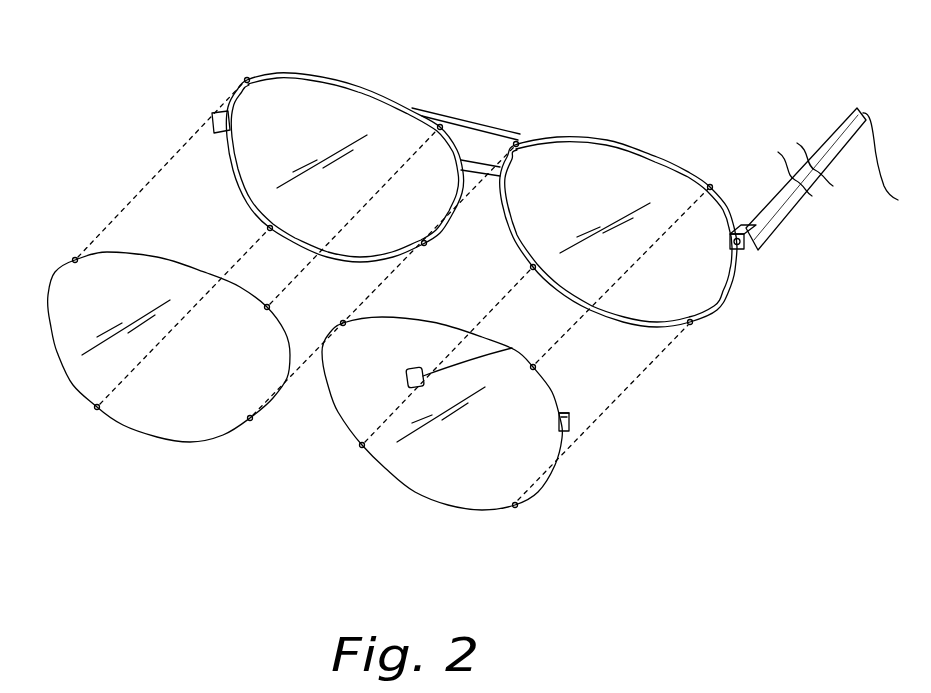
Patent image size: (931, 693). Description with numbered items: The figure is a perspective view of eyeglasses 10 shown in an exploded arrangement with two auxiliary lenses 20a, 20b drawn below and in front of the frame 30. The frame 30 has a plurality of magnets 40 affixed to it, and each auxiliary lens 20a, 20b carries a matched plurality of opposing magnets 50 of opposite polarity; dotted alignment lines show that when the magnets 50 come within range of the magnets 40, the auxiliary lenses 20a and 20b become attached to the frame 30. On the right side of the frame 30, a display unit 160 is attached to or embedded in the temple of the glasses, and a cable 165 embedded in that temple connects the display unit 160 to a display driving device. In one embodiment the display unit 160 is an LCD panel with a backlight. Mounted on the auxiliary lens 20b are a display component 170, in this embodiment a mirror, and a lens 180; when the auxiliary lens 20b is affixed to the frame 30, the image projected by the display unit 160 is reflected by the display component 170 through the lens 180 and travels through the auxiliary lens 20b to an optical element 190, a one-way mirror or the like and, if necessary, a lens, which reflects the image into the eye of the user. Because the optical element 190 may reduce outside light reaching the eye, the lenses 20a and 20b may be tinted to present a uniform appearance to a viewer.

The eyeglasses 10 is at (634, 146).
The frame 30 is at (337, 80).
The magnets 40 is at (245, 79).
The opposing magnets 50 is at (73, 260).
The auxiliary lens 20a is at (147, 420).
The auxiliary lens 20b is at (440, 482).
The display unit 160 is at (750, 251).
The cable 165 is at (833, 132).
The display component 170 is at (570, 423).
The lens 180 is at (562, 414).
The optical element 190 is at (511, 349).